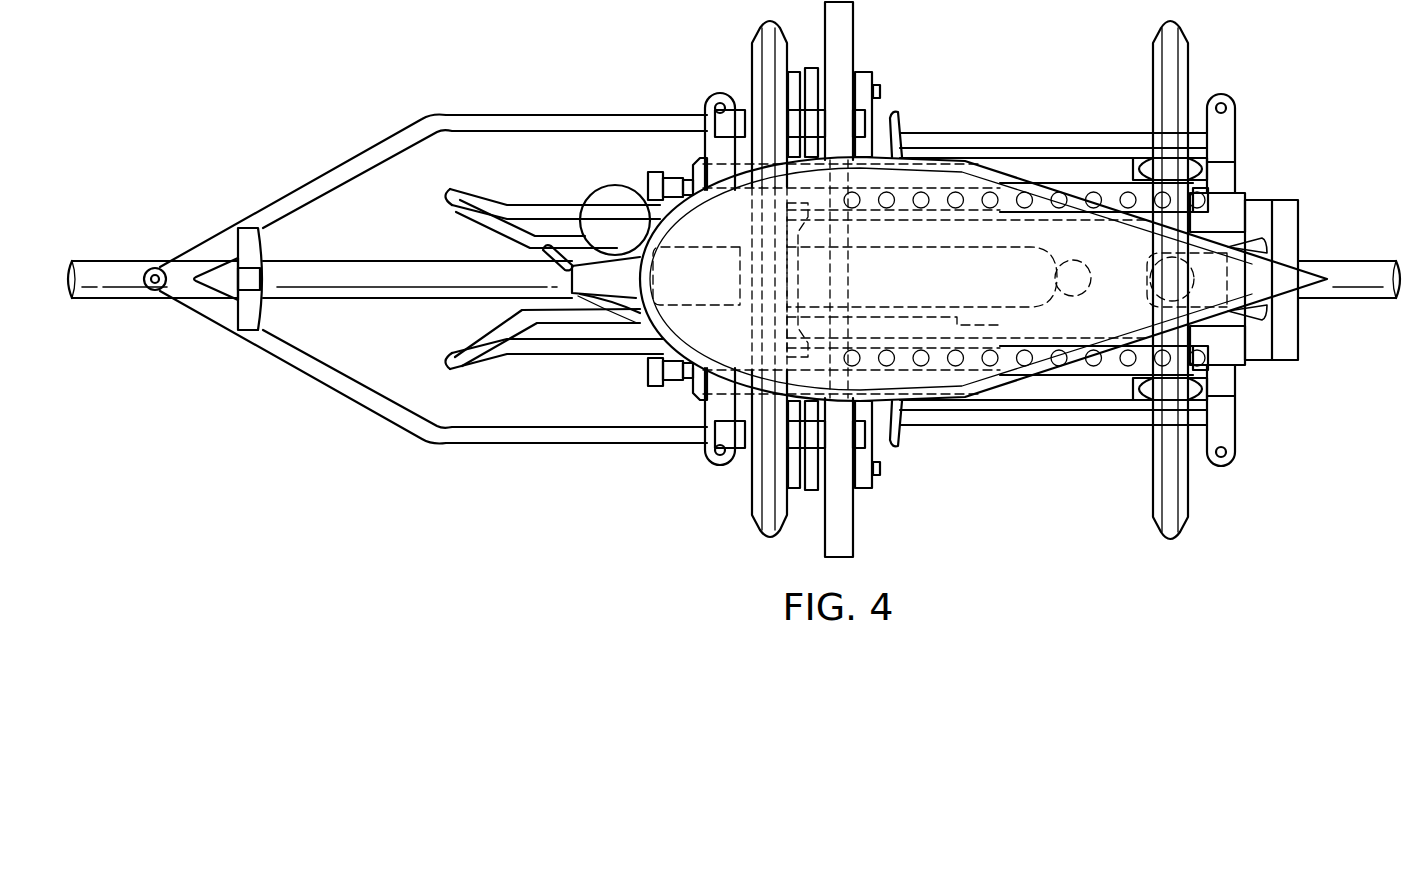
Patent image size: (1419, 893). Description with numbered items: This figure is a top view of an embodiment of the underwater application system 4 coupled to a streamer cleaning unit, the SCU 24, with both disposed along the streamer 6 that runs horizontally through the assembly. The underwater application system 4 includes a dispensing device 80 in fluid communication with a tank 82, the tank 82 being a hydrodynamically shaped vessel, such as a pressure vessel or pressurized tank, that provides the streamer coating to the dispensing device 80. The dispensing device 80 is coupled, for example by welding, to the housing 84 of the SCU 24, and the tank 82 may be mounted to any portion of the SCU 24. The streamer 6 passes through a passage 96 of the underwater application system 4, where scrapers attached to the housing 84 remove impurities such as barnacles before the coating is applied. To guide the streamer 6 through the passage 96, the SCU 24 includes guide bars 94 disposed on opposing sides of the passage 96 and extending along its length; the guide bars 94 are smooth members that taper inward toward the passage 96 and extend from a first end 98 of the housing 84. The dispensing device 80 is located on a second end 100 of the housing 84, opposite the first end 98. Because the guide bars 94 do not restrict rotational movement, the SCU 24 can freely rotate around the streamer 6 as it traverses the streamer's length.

The underwater application system 4 is at (977, 442).
The streamer 6 is at (392, 262).
The streamer cleaning unit (SCU) 24 is at (425, 304).
The dispensing device 80 is at (1298, 229).
The tank 82 is at (1013, 180).
The housing 84 is at (672, 172).
The guide bars 94 is at (530, 202).
The passage 96 is at (486, 314).
The first end 98 is at (489, 479).
The second end 100 is at (1263, 476).